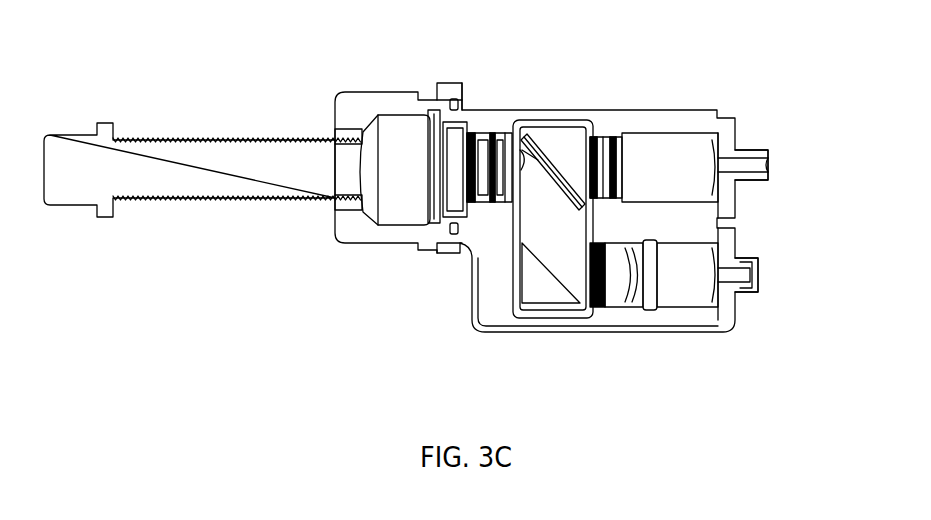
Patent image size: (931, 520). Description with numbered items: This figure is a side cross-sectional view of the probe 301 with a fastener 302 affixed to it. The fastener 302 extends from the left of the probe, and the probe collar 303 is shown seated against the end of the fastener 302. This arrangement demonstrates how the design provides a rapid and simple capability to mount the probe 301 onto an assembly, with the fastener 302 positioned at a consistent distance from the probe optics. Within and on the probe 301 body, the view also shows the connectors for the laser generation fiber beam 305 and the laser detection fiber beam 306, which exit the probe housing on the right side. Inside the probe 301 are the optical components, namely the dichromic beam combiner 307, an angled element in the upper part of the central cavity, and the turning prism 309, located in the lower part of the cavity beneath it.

The probe 301 is at (387, 50).
The fastener 302 is at (191, 139).
The probe collar 303 is at (380, 237).
The laser generation fiber beam connector 305 is at (765, 151).
The laser detection fiber beam connector 306 is at (755, 257).
The dichromic beam combiner 307 is at (540, 158).
The turning prism 309 is at (540, 286).